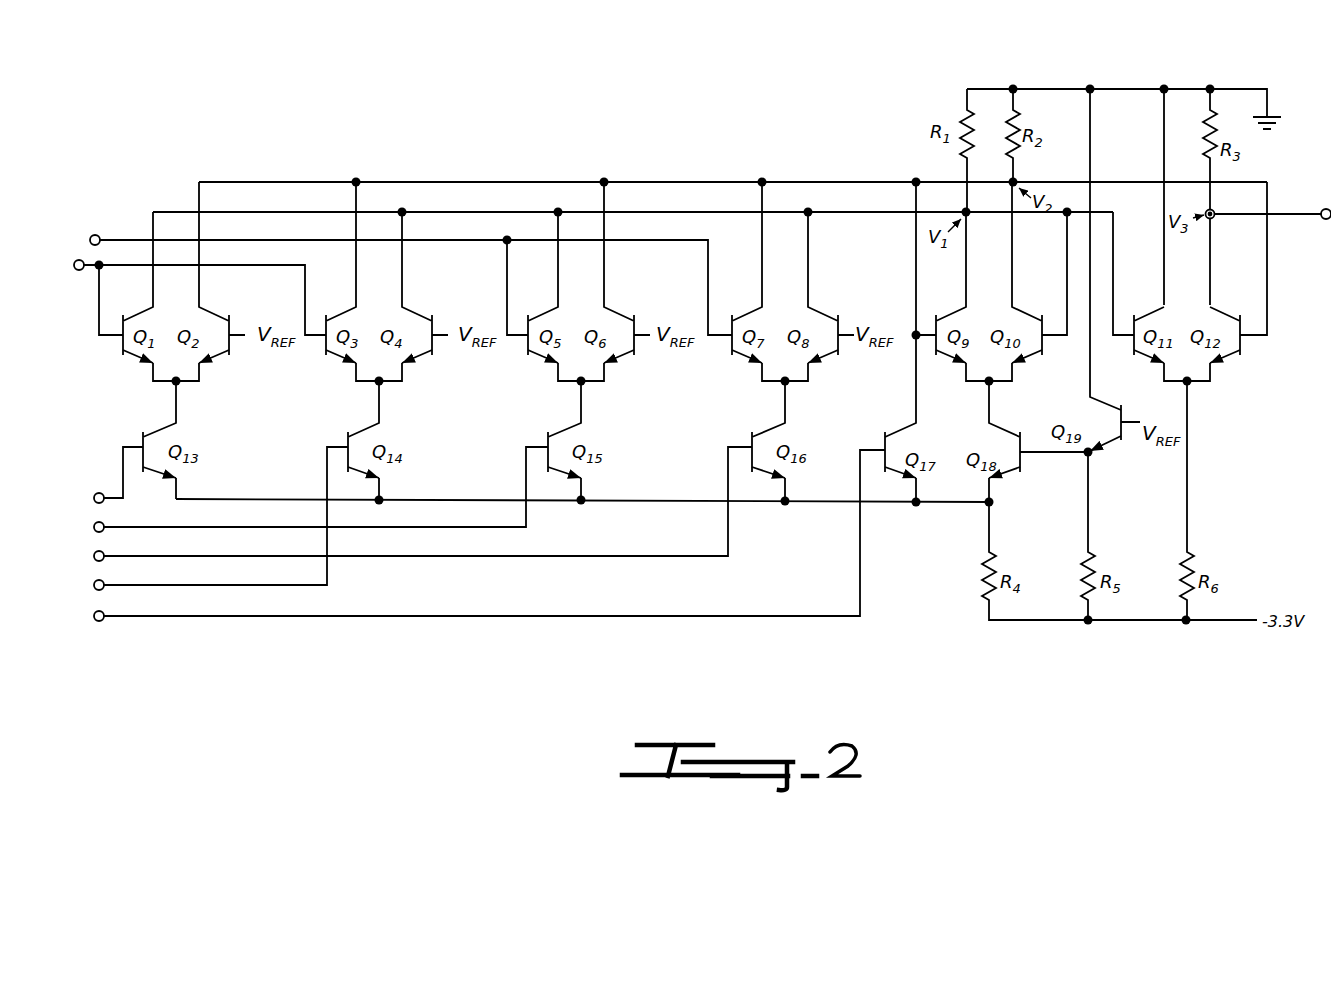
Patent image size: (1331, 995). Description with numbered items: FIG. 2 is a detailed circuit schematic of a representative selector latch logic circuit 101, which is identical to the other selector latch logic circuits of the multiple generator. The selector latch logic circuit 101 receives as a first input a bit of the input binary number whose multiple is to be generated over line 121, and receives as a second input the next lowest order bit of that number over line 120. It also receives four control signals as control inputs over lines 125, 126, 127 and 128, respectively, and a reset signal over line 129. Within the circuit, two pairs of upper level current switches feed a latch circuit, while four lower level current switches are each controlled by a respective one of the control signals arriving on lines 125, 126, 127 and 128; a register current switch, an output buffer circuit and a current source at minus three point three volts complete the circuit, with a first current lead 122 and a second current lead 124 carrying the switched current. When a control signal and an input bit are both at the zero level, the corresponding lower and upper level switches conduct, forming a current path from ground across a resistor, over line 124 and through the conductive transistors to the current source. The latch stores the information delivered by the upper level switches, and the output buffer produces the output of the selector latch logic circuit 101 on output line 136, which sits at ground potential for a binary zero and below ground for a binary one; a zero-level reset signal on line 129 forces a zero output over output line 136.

The selector latch logic circuit 101 is at (331, 150).
The line 120 is at (144, 239).
The line 121 is at (145, 265).
The first current lead 122 is at (678, 179).
The second current lead 124 is at (678, 210).
The line 125 is at (117, 497).
The line 126 is at (168, 526).
The line 127 is at (206, 556).
The line 128 is at (239, 584).
The line 129 is at (259, 616).
The output line 136 is at (1274, 215).